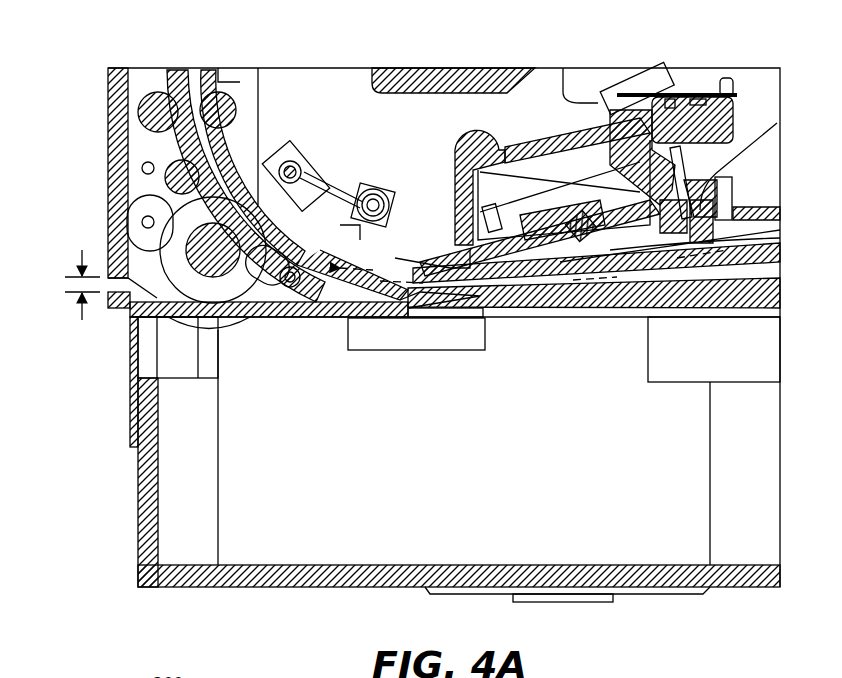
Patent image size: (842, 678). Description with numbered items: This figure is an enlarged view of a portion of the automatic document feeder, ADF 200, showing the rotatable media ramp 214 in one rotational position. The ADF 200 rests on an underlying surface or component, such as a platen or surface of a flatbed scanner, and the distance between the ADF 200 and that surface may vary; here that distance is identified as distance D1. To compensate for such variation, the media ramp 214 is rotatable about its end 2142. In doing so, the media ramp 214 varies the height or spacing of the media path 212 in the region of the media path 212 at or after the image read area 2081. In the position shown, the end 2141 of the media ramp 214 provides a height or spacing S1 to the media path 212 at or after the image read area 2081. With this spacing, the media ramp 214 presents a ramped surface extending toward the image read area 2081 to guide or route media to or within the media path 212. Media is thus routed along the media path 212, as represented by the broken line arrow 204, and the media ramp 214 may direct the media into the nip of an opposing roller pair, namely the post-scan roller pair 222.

The automatic document feeder 200 is at (216, 60).
The post-scan roller pair 222 is at (162, 190).
The rotatable media ramp 214 is at (332, 295).
The end of media ramp 2142 is at (285, 295).
The media path 212 is at (338, 225).
The broken line arrow 204 is at (447, 267).
The end of media ramp 2141 is at (400, 300).
The image read area 2081 is at (400, 335).
The height or spacing S1 is at (394, 260).
The distance D1 is at (82, 274).